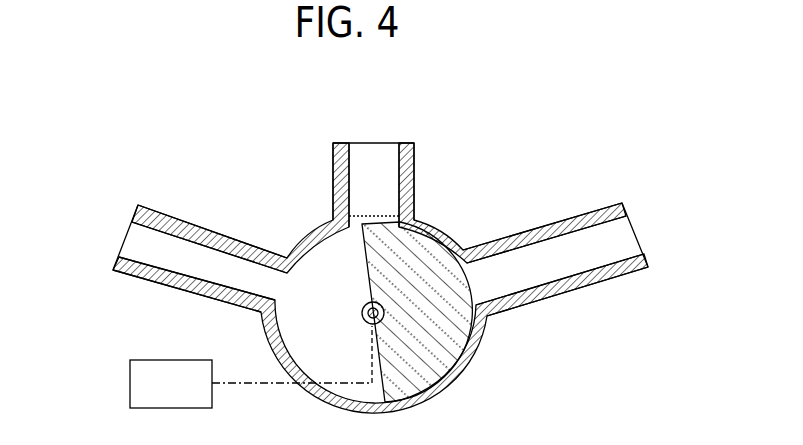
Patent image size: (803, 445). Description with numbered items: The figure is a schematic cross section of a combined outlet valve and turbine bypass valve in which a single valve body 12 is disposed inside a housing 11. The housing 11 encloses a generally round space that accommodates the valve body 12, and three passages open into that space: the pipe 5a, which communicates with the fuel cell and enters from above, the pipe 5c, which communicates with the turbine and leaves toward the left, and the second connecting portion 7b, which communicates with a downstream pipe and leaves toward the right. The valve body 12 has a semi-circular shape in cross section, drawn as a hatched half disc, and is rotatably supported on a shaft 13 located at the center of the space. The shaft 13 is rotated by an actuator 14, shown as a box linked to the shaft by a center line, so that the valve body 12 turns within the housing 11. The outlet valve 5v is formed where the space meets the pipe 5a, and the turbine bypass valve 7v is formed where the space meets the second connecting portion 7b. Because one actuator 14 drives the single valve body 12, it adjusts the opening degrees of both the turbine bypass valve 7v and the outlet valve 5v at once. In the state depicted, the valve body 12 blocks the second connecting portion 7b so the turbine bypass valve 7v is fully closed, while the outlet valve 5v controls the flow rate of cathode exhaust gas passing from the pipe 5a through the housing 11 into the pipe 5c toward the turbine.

The pipe 5a is at (370, 172).
The outlet valve 5v is at (373, 216).
The pipe 5c is at (157, 247).
The second connecting portion 7b is at (602, 244).
The turbine bypass valve 7v is at (473, 281).
The housing 11 is at (447, 388).
The valve body 12 is at (394, 278).
The shaft 13 is at (358, 315).
The actuator 14 is at (130, 383).